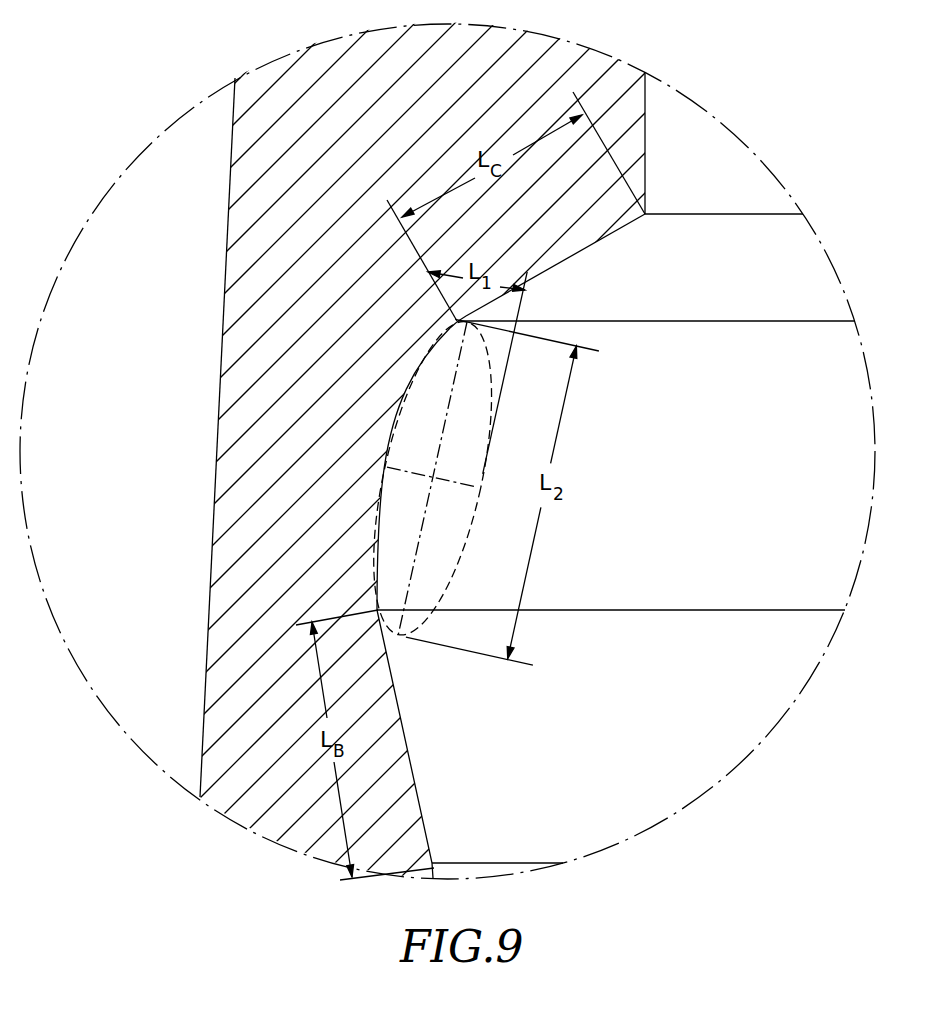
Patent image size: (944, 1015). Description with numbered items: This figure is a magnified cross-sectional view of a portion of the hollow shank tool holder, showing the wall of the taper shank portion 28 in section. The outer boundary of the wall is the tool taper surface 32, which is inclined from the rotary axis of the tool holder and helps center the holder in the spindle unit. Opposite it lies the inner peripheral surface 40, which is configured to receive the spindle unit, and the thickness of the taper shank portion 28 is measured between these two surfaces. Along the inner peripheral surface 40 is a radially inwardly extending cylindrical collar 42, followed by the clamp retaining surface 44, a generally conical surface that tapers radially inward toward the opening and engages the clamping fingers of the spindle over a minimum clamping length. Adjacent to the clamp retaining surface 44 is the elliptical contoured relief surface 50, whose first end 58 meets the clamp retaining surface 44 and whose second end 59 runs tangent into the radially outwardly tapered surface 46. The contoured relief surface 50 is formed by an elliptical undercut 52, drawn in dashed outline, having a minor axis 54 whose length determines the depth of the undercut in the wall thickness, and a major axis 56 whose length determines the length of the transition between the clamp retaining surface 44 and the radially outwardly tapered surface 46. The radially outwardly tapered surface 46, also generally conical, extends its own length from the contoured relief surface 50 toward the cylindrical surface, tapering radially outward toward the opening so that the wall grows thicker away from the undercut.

The taper shank portion 28 is at (272, 188).
The tool taper surface 32 is at (237, 345).
The inner peripheral surface 40 is at (617, 418).
The radially inwardly extending cylindrical collar 42 is at (645, 117).
The clamp retaining surface 44 is at (586, 247).
The radially outwardly tapered surface 46 is at (403, 724).
The elliptical contoured relief surface 50 is at (393, 438).
The elliptical undercut 52 is at (490, 360).
The minor axis 54 is at (387, 467).
The major axis 56 is at (436, 467).
The first end 58 is at (457, 323).
The second end 59 is at (384, 592).